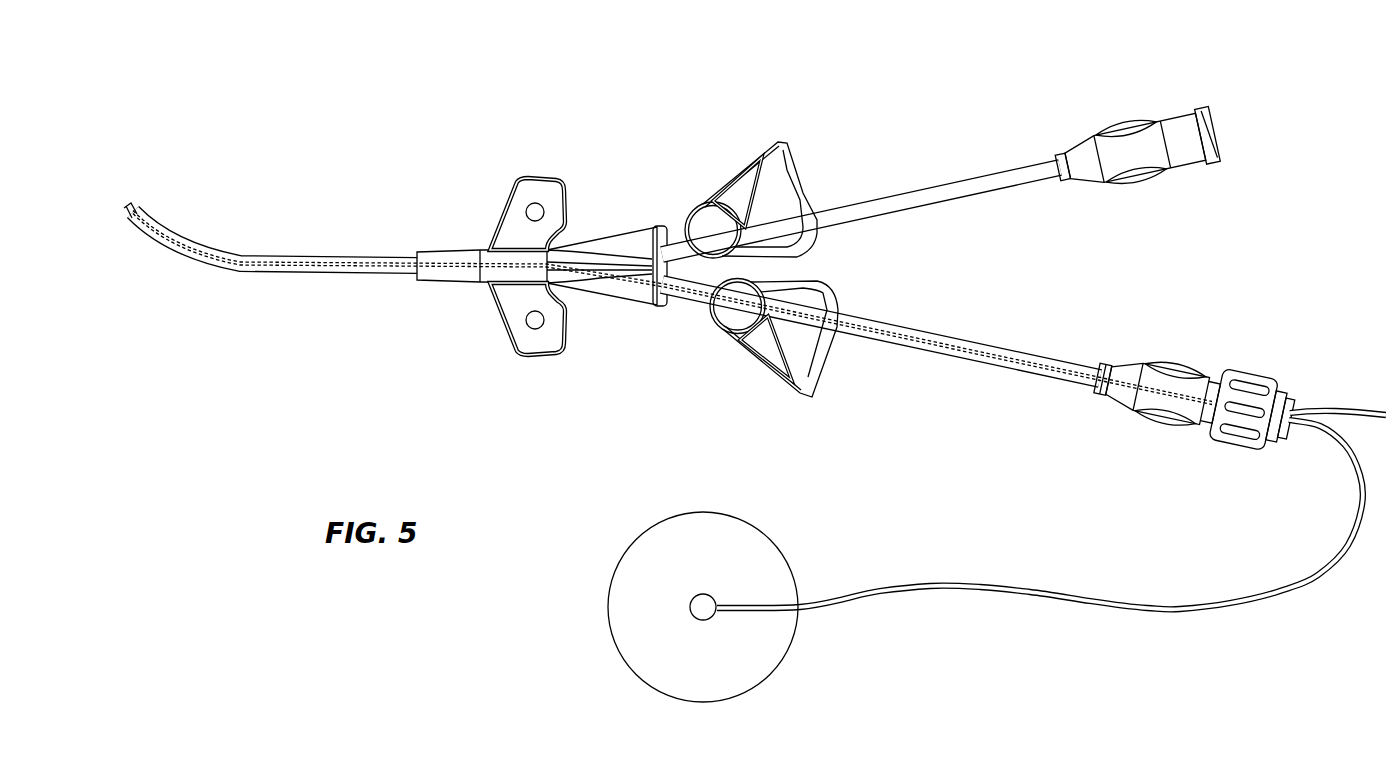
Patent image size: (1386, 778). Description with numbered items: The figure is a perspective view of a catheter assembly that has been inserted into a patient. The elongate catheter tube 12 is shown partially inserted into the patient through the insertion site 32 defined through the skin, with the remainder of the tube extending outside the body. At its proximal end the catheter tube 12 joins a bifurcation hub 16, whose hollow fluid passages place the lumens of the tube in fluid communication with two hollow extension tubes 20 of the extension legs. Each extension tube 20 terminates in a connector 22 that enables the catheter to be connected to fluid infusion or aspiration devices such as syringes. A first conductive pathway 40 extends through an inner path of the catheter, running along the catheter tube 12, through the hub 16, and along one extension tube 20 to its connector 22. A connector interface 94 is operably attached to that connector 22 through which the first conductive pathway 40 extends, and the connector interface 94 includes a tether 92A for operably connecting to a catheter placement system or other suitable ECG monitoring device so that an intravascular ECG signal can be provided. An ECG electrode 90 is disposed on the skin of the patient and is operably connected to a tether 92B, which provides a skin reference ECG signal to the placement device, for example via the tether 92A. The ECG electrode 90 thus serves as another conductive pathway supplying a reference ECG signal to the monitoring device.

The catheter tube 12 is at (212, 270).
The bifurcation hub 16 is at (492, 250).
The extension tube 20 is at (920, 180).
The connector 22 is at (1123, 125).
The insertion site 32 is at (138, 204).
The first conductive pathway 40 is at (300, 268).
The ECG electrode 90 is at (743, 653).
The tether 92A is at (1337, 409).
The tether 92B is at (1265, 594).
The connector interface 94 is at (1254, 378).